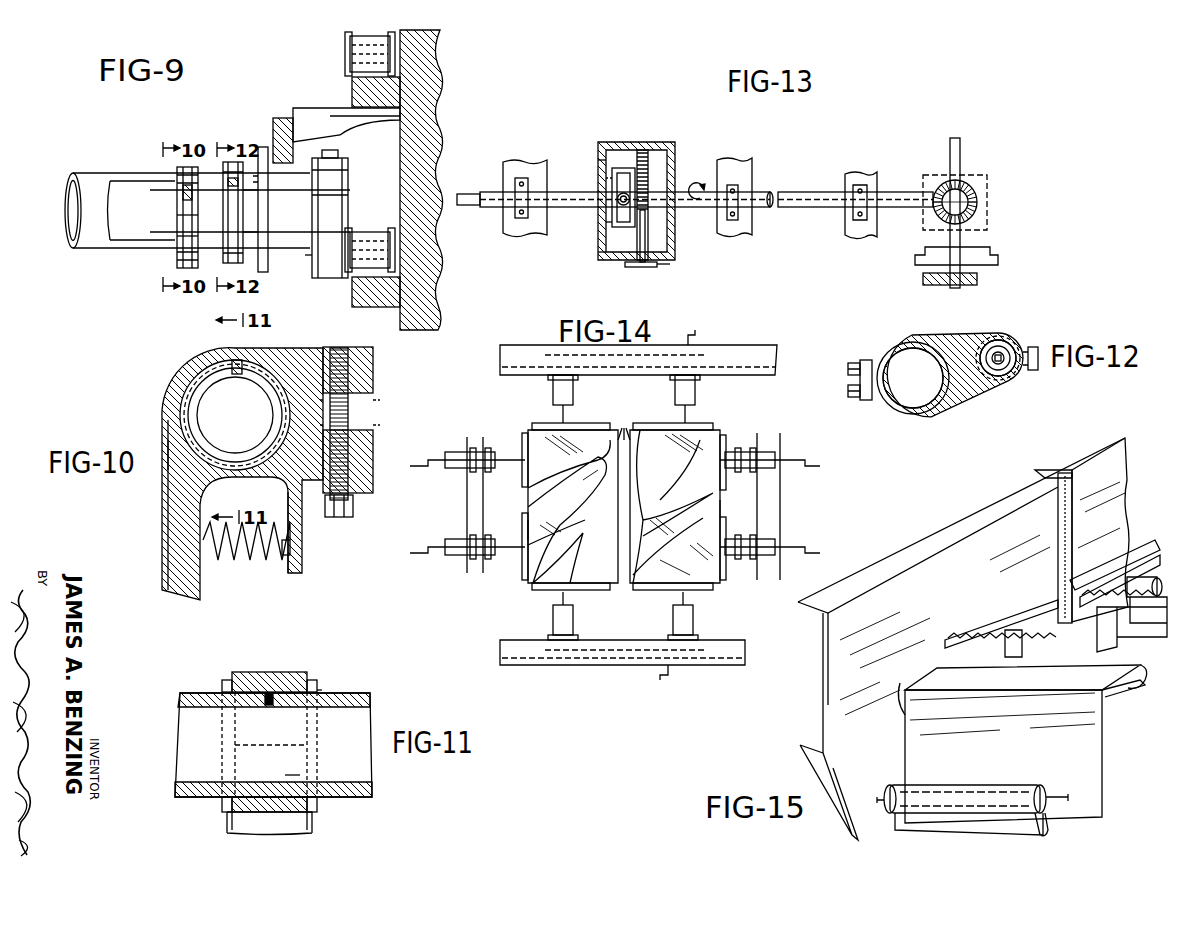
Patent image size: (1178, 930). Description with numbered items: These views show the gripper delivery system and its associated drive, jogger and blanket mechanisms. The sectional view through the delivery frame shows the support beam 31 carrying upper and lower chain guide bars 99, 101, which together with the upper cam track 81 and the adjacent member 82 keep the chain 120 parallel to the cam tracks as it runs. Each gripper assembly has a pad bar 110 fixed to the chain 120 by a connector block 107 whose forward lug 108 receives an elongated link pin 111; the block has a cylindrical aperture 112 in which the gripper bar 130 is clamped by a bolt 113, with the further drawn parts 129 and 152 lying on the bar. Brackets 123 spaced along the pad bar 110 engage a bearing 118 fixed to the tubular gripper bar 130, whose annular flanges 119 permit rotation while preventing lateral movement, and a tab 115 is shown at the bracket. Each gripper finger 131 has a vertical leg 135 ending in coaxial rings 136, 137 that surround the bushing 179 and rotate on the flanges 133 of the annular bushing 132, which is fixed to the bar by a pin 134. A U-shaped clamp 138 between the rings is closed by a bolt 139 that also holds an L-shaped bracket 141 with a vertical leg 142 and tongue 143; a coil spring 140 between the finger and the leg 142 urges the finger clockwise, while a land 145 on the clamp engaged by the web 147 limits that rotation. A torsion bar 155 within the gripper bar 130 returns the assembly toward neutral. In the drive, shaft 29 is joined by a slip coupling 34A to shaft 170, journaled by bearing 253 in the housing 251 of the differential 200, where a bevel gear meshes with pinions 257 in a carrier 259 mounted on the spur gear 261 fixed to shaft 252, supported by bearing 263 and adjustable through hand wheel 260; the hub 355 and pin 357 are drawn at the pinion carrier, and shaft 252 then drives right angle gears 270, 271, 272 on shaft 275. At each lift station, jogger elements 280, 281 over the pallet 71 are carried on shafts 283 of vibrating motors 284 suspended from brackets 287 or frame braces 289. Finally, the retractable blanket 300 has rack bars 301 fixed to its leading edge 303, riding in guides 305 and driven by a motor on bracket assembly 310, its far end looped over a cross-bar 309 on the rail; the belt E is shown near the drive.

In FIG. 13, the shaft 29 is at (463, 193).
In FIG. 9, the support beam 31 is at (440, 165).
In FIG. 14, the support beam 31 is at (742, 360).
In FIG. 15, the support beam 31 is at (940, 603).
In FIG. 13, the slip coupling arrangement 34A is at (552, 192).
In FIG. 14, the pallet 71 is at (576, 513).
In FIG. 9, the upper cam track 81 is at (279, 120).
In FIG. 9, the bracket 82 is at (340, 122).
In FIG. 9, the upper bar 99 is at (352, 92).
In FIG. 9, the lower bar 101 is at (375, 307).
In FIG. 9, the connector block 107 is at (348, 197).
In FIG. 9, the forward extending lug 108 is at (327, 280).
In FIG. 9, the pad bar 110 is at (160, 226).
In FIG. 12, the pad bar 110 is at (913, 346).
In FIG. 9, the link pin 111 is at (310, 270).
In FIG. 9, the cylindrical aperture 112 is at (337, 172).
In FIG. 9, the bolt 113 is at (338, 154).
In FIG. 12, the tab 115 is at (1033, 347).
In FIG. 12, the bearing 118 is at (997, 384).
In FIG. 9, the annular upstanding flange 119 is at (228, 166).
In FIG. 9, the chain 120 is at (350, 53).
In FIG. 9, the bracket 123 is at (265, 272).
In FIG. 12, the bracket 123 is at (985, 340).
In FIG. 9, the shaft line 129 is at (250, 236).
In FIG. 9, the gripper bar 130 is at (182, 190).
In FIG. 12, the gripper bar 130 is at (975, 346).
In FIG. 10, the gripper bar 130 is at (222, 446).
In FIG. 11, the gripper bar 130 is at (370, 796).
In FIG. 9, the gripper finger 131 is at (172, 256).
In FIG. 10, the gripper finger 131 is at (166, 593).
In FIG. 10, the annular bushing 132 is at (205, 362).
In FIG. 11, the annular bushing 132 is at (318, 691).
In FIG. 10, the annular upstanding flange 133 is at (178, 388).
In FIG. 11, the annular upstanding flange 133 is at (226, 683).
In FIG. 10, the pin 134 is at (240, 362).
In FIG. 11, the pin 134 is at (267, 706).
In FIG. 13, the vertical leg 135 is at (998, 256).
In FIG. 10, the vertical leg 135 is at (175, 550).
In FIG. 10, the ring 136 is at (345, 410).
In FIG. 11, the ring 136 is at (312, 680).
In FIG. 11, the ring 137 is at (226, 680).
In FIG. 9, the U-shaped clamp 138 is at (185, 186).
In FIG. 10, the U-shaped clamp 138 is at (373, 382).
In FIG. 11, the U-shaped clamp 138 is at (270, 673).
In FIG. 10, the bolt 139 is at (353, 512).
In FIG. 10, the coil spring 140 is at (243, 558).
In FIG. 10, the L-shaped bracket 141 is at (373, 492).
In FIG. 9, the vertical leg 142 is at (180, 230).
In FIG. 10, the vertical leg 142 is at (302, 553).
In FIG. 10, the tongue 143 is at (285, 556).
In FIG. 10, the land 145 is at (168, 412).
In FIG. 11, the land 145 is at (233, 741).
In FIG. 10, the web 147 is at (164, 462).
In FIG. 11, the web 147 is at (303, 770).
In FIG. 9, the shaft line 152 is at (252, 192).
In FIG. 12, the torsion bar 155 is at (1003, 362).
In FIG. 13, the shaft 170 is at (600, 152).
In FIG. 11, the bushing 179 is at (283, 681).
In FIG. 13, the differential 200 is at (653, 138).
In FIG. 13, the housing 251 is at (604, 261).
In FIG. 13, the shaft 252 is at (796, 192).
In FIG. 13, the bearing 253 is at (612, 216).
In FIG. 13, the pinion 257 is at (736, 192).
In FIG. 13, the pinion carrier 259 is at (627, 268).
In FIG. 13, the hand wheel 260 is at (660, 271).
In FIG. 13, the spur gear 261 is at (649, 168).
In FIG. 13, the bearing 263 is at (745, 226).
In FIG. 13, the right angle drive gear 270 is at (935, 182).
In FIG. 13, the right angle drive gear 271 is at (977, 210).
In FIG. 13, the right angle drive gear 272 is at (972, 186).
In FIG. 13, the shaft 275 is at (960, 152).
In FIG. 14, the jogger element 280 is at (595, 590).
In FIG. 14, the jogger element 281 is at (528, 528).
In FIG. 14, the shaft 283 is at (521, 470).
In FIG. 14, the vibrating motor 284 is at (495, 452).
In FIG. 14, the bracket 287 is at (548, 638).
In FIG. 14, the frame brace 289 is at (470, 505).
In FIG. 15, the retractable blanket 300 is at (1020, 742).
In FIG. 15, the rack bar 301 is at (1015, 612).
In FIG. 15, the leading edge 303 is at (1050, 668).
In FIG. 15, the guide 305 is at (1003, 630).
In FIG. 15, the cross-bar 309 is at (1138, 690).
In FIG. 15, the bracket assembly 310 is at (1118, 636).
In FIG. 13, the gear hub 355 is at (614, 186).
In FIG. 13, the pin 357 is at (630, 197).
In FIG. 15, the belt E is at (1110, 560).